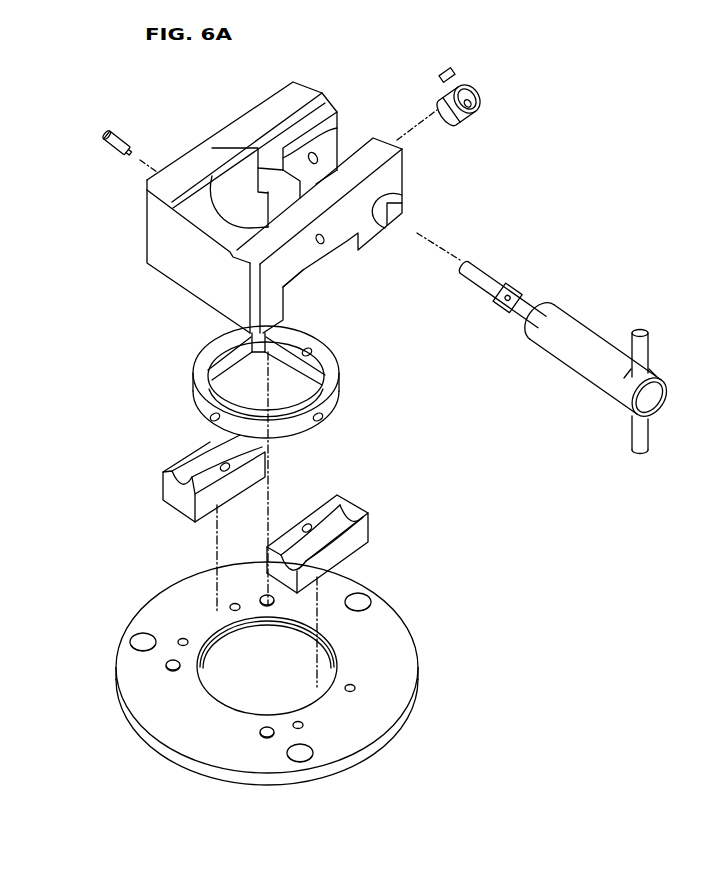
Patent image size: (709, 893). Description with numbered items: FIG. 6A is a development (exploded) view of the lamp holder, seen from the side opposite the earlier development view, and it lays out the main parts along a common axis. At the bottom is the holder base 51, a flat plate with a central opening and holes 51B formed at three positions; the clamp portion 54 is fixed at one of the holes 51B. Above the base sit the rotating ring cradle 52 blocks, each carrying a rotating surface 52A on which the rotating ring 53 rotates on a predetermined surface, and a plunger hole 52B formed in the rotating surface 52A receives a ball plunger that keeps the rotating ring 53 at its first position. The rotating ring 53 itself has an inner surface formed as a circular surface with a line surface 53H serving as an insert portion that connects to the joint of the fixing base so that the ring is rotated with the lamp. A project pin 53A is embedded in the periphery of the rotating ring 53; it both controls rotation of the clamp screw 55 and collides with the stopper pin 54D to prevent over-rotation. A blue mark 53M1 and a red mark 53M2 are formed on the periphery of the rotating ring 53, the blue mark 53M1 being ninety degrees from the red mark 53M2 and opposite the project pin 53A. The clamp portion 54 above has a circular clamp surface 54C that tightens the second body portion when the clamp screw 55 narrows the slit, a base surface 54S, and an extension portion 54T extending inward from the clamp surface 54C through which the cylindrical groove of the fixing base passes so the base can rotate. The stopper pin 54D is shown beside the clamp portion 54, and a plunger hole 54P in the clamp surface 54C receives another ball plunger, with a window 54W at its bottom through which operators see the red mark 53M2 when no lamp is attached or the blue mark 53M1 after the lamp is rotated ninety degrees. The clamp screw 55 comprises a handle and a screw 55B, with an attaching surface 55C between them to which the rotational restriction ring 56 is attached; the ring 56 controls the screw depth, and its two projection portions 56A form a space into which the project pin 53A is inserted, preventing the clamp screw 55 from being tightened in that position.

The holder base 51 is at (267, 683).
The holes 51B is at (262, 598).
The rotating ring cradle 52 is at (270, 514).
The rotating surface 52A is at (340, 500).
The plunger hole 52B is at (195, 521).
The rotating ring 53 is at (265, 386).
The project pin 53A is at (326, 338).
The line surface 53H is at (269, 340).
The blue mark 53M1 is at (210, 419).
The red mark 53M2 is at (322, 424).
The clamp portion 54 is at (273, 207).
The circular clamp surface 54C is at (337, 124).
The stopper pin 54D is at (103, 141).
The plunger hole 54P is at (324, 242).
The base surface 54S is at (360, 180).
The extension portion 54T is at (177, 197).
The window 54W is at (310, 260).
The clamp screw 55 is at (565, 345).
The screw 55B is at (481, 266).
The attaching surface 55C is at (517, 291).
The rotational restriction ring 56 is at (464, 88).
The projection portions 56A is at (440, 68).